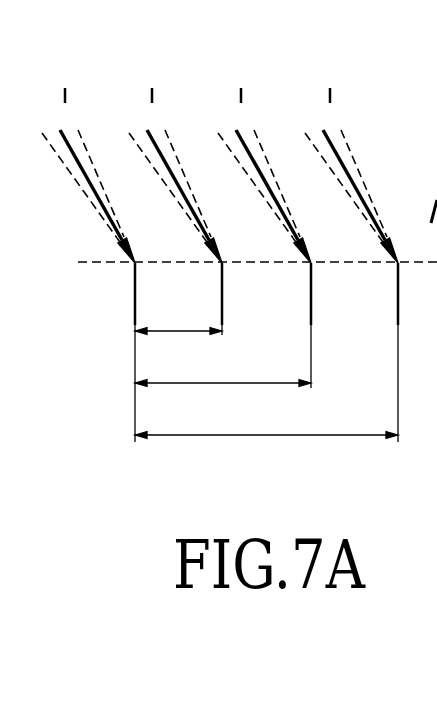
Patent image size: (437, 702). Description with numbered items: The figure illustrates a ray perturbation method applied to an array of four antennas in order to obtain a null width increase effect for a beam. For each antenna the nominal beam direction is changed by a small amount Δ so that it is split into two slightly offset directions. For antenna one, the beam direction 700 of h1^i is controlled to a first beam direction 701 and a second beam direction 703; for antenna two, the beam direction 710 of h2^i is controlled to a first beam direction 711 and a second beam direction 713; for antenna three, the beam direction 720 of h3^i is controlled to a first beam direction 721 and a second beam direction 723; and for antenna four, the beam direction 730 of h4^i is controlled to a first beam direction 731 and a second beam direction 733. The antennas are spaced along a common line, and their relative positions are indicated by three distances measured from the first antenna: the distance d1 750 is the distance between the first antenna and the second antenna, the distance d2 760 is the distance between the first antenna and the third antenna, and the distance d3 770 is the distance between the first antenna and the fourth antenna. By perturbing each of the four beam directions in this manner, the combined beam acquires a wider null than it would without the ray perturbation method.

The beam direction 700 is at (52, 88).
The first beam direction 701 is at (97, 171).
The second beam direction 703 is at (103, 220).
The beam direction 710 is at (139, 88).
The first beam direction 711 is at (184, 171).
The second beam direction 713 is at (191, 220).
The beam direction 720 is at (228, 88).
The first beam direction 721 is at (273, 171).
The second beam direction 723 is at (280, 220).
The beam direction 730 is at (317, 88).
The first beam direction 731 is at (362, 171).
The second beam direction 733 is at (370, 220).
The distance d1 750 is at (165, 331).
The distance d2 760 is at (222, 383).
The distance d3 770 is at (267, 435).